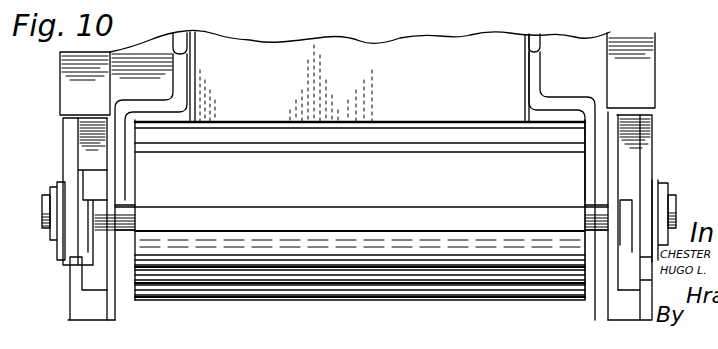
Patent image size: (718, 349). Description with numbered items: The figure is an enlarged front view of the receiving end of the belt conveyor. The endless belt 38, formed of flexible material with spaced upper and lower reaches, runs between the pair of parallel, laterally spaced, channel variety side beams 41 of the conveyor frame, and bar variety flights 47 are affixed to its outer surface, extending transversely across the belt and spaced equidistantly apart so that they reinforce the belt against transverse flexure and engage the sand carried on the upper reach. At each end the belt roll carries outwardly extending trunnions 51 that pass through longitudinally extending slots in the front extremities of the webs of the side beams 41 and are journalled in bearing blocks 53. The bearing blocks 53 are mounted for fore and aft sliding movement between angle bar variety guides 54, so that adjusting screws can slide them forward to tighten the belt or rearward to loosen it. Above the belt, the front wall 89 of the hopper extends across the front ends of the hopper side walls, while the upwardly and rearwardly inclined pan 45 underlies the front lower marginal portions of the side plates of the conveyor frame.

The endless belt 38 is at (360, 210).
The side beams 41 is at (73, 93).
The pan 45 is at (356, 60).
The flights 47 is at (262, 227).
The trunnions 51 is at (45, 230).
The bearing blocks 53 is at (68, 245).
The guides 54 is at (76, 154).
The front wall 89 is at (363, 48).